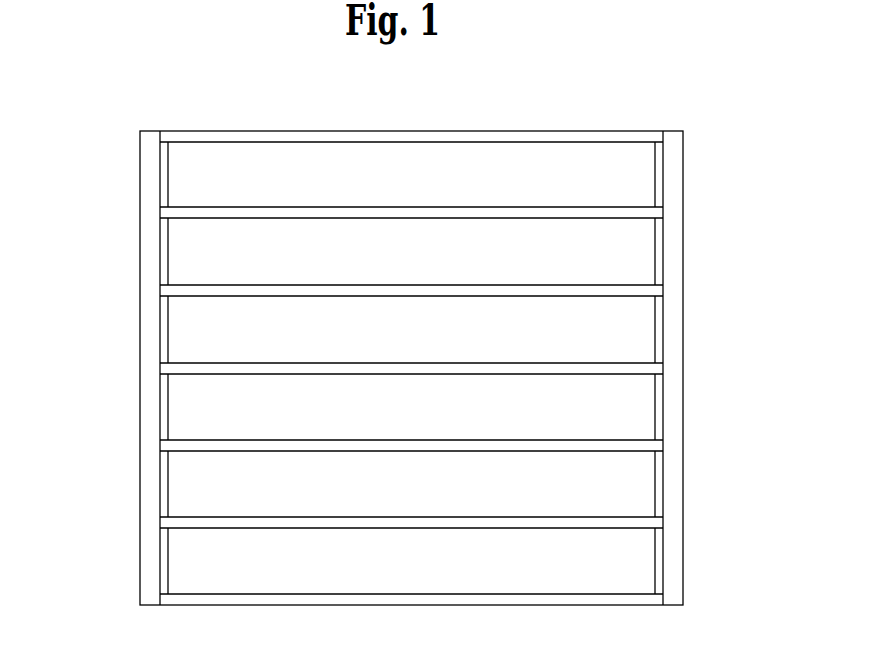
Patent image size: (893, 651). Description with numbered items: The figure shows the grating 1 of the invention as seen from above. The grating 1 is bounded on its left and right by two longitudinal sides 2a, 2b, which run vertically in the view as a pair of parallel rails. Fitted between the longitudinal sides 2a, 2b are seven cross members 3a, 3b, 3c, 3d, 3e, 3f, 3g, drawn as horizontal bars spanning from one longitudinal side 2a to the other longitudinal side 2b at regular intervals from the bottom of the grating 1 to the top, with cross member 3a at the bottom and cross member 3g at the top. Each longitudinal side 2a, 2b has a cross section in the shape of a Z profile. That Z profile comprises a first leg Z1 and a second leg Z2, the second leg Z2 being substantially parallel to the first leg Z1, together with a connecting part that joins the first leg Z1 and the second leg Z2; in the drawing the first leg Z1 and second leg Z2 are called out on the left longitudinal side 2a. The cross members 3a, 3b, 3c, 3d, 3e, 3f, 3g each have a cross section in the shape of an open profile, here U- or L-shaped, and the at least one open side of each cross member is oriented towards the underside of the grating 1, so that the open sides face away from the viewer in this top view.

The grating 1 is at (96, 117).
The longitudinal side 2a is at (148, 487).
The longitudinal side 2b is at (668, 485).
The cross member 3a is at (213, 600).
The cross member 3b is at (272, 522).
The cross member 3c is at (332, 450).
The cross member 3d is at (394, 369).
The cross member 3e is at (331, 290).
The cross member 3f is at (277, 212).
The cross member 3g is at (215, 137).
The first leg Z1 is at (160, 398).
The second leg Z2 is at (150, 333).